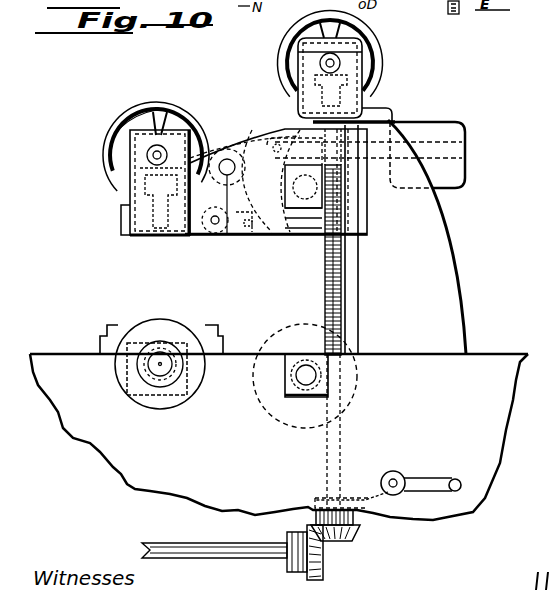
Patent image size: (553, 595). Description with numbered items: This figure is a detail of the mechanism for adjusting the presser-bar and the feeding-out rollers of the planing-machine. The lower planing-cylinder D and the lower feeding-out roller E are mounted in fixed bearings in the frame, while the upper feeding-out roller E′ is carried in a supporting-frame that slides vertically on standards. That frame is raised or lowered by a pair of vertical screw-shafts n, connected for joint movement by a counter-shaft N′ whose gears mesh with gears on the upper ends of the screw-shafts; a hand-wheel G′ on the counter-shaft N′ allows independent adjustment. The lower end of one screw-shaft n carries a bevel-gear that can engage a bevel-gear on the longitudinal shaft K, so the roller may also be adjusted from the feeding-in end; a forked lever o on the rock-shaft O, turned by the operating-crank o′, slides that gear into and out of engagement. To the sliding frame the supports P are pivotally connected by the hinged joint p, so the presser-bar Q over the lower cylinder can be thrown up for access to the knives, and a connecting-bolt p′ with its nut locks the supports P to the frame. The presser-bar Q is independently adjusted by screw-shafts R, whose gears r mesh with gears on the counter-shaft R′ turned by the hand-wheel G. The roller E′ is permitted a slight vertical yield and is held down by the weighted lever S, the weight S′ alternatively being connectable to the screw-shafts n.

The hand-wheel G is at (184, 97).
The adjusting screw-shafts R is at (143, 207).
The counter-shaft R′ is at (130, 138).
The gears r is at (148, 156).
The presser-bar Q is at (147, 238).
The upper feeding-out roller E′ is at (300, 237).
The hinged joint p is at (229, 159).
The supports P is at (195, 238).
The connecting-bolt p′ is at (240, 243).
The vertical screw-shafts n is at (343, 285).
The hand-wheel G′ is at (408, 40).
The counter-shaft N′ is at (340, 63).
The weighted lever S is at (447, 150).
The weight S′ is at (455, 172).
The lower planing-cylinder D is at (150, 327).
The lower feeding-out roller E is at (288, 338).
The rock-shaft O is at (393, 471).
The operating-crank o′ is at (437, 483).
The forked lever o is at (370, 499).
The longitudinal shaft K is at (113, 515).